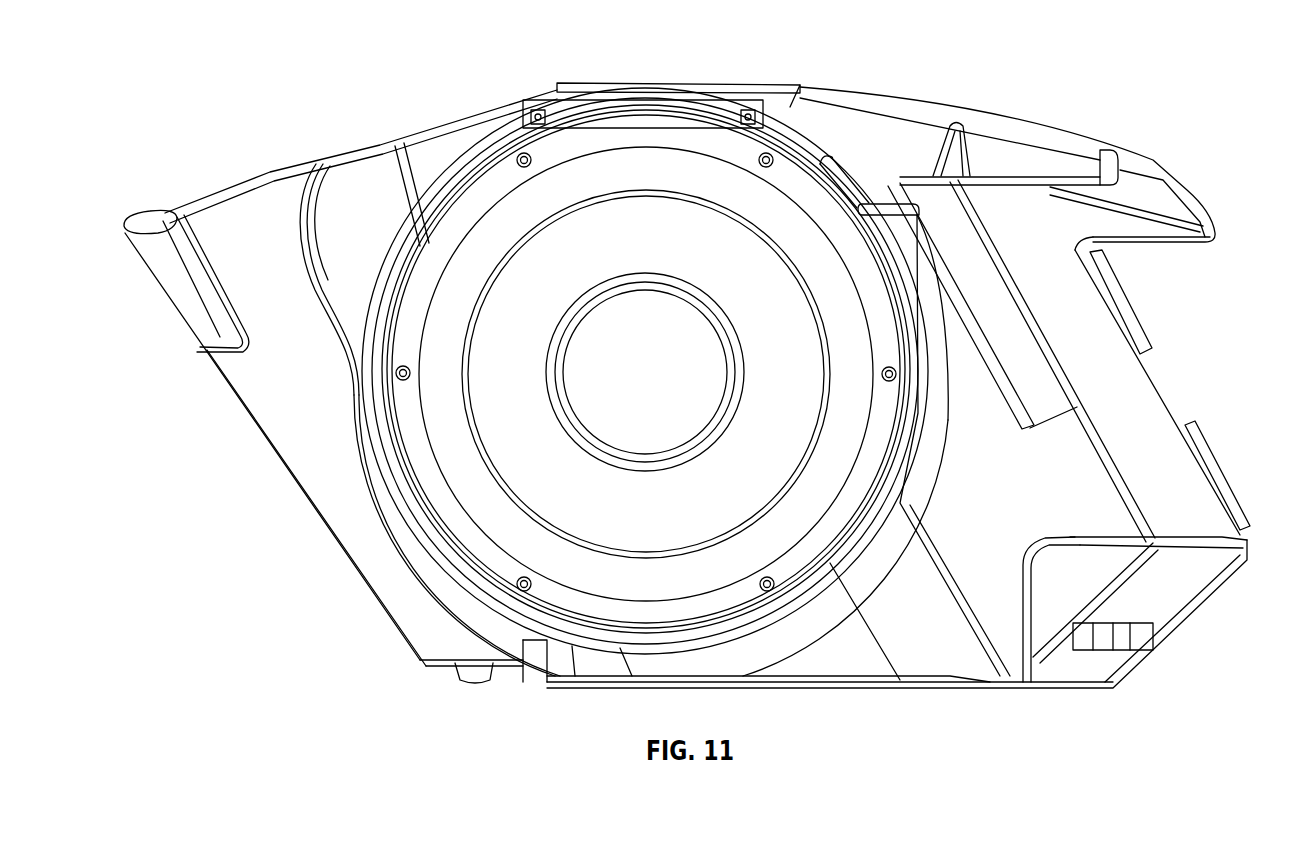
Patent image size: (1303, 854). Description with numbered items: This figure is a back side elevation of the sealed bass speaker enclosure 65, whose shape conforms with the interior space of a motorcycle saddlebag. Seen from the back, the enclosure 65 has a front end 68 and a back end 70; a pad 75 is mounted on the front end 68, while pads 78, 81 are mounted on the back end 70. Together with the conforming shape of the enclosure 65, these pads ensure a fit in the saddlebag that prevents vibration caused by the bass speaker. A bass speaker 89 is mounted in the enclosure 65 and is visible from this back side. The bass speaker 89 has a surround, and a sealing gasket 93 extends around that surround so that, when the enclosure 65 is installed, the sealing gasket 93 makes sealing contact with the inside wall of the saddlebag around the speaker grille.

The bass speaker enclosure 65 is at (857, 91).
The front end 68 is at (250, 422).
The back end 70 is at (1165, 392).
The pad 75 is at (325, 538).
The pad 78 is at (1130, 303).
The pad 81 is at (1225, 473).
The bass speaker 89 is at (783, 200).
The sealing gasket 93 is at (500, 147).